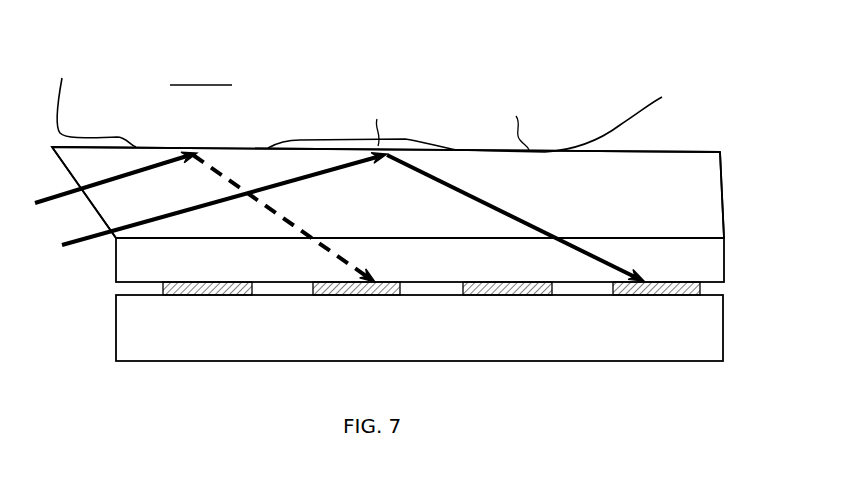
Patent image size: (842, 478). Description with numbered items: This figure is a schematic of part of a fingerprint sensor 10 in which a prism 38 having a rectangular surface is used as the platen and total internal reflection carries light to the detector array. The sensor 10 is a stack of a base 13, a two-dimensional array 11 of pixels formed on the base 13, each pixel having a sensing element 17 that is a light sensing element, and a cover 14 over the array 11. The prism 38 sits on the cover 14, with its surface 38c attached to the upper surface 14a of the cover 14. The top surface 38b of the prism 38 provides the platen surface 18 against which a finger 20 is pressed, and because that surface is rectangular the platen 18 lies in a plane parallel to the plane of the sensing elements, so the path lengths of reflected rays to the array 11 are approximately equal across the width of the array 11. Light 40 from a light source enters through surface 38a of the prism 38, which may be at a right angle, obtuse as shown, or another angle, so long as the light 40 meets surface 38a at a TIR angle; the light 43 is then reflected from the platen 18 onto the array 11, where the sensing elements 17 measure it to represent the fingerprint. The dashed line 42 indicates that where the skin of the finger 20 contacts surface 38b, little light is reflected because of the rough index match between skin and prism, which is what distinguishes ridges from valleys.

The sensor 10 is at (773, 233).
The array 11 is at (467, 308).
The base 13 is at (725, 327).
The cover 14 is at (725, 262).
The upper surface of cover 14a is at (219, 239).
The sensing element 17 is at (197, 297).
The platen surface 18 is at (707, 152).
The finger 20 is at (654, 122).
The prism 38 is at (722, 180).
The surface of prism 38a is at (92, 208).
The top surface of prism 38b is at (640, 153).
The surface of prism 38c is at (678, 237).
The light 40 is at (151, 173).
The dashed line 42 is at (287, 215).
The reflected light 43 is at (500, 207).